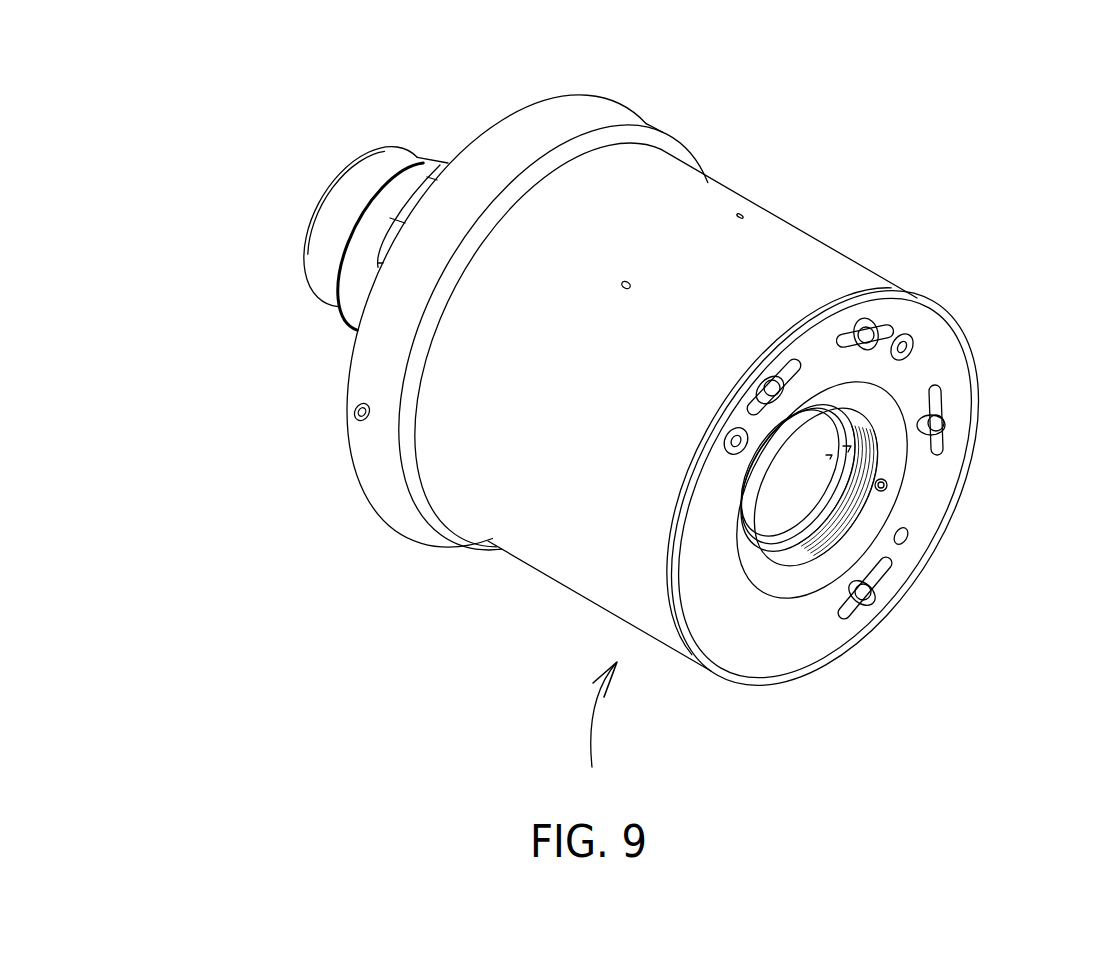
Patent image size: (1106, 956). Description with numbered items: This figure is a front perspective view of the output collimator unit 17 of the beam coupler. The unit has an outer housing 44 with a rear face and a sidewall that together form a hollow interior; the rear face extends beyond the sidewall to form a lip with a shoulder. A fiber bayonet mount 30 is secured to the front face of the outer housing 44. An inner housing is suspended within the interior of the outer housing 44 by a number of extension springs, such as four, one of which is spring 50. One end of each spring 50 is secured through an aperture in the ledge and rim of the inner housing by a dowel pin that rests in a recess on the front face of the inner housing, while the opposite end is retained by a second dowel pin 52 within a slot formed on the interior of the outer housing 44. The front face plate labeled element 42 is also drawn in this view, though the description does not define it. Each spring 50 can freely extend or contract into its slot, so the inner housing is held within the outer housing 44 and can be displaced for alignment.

The output collimator unit 17 is at (596, 739).
The fiber bayonet mount 30 is at (332, 237).
The mounting plate 42 is at (748, 625).
The outer housing 44 is at (507, 497).
The spring 50 is at (770, 380).
The dowel pin 52 is at (780, 360).